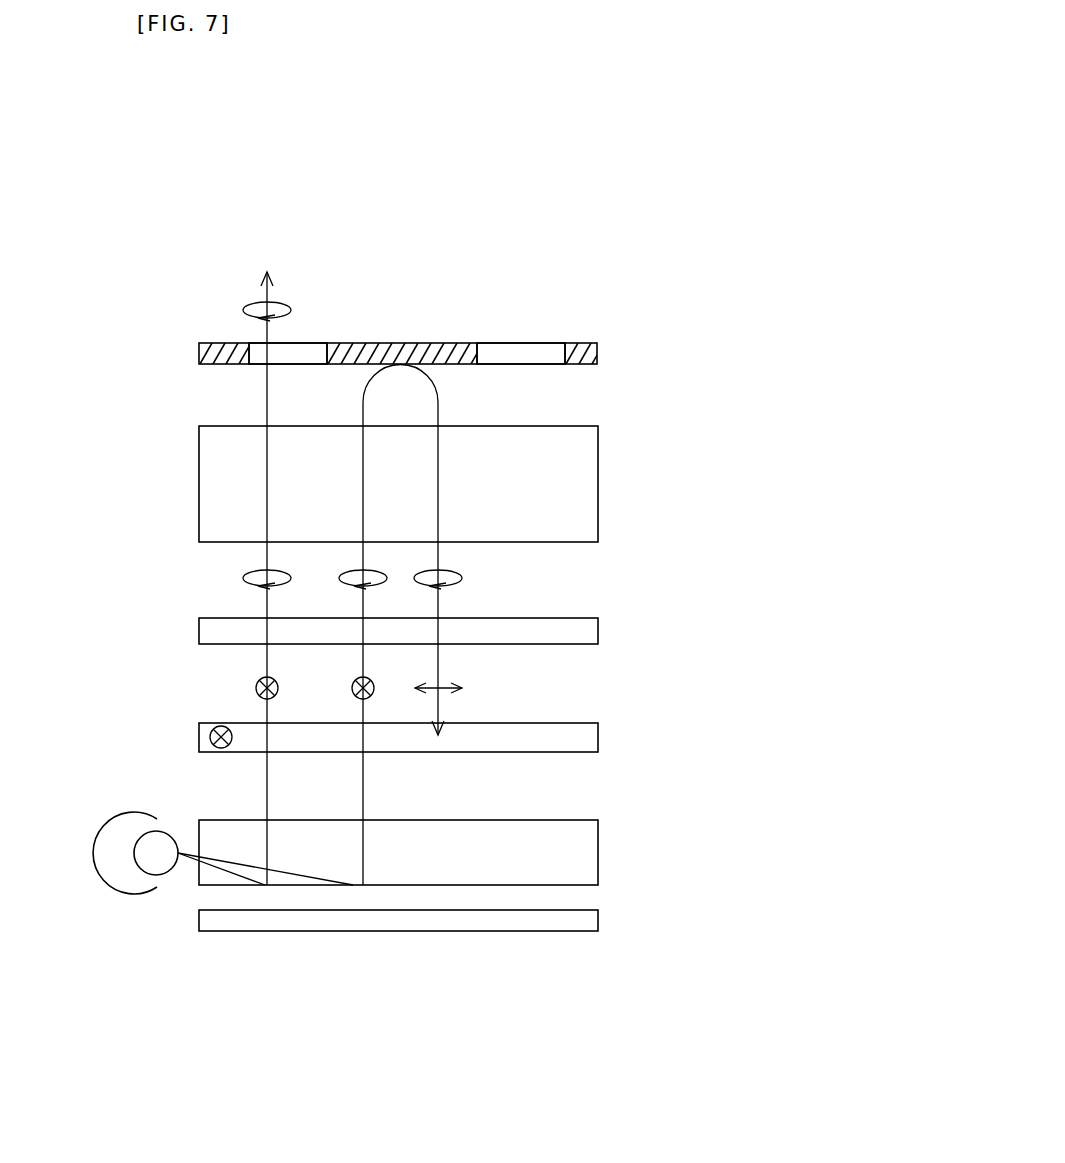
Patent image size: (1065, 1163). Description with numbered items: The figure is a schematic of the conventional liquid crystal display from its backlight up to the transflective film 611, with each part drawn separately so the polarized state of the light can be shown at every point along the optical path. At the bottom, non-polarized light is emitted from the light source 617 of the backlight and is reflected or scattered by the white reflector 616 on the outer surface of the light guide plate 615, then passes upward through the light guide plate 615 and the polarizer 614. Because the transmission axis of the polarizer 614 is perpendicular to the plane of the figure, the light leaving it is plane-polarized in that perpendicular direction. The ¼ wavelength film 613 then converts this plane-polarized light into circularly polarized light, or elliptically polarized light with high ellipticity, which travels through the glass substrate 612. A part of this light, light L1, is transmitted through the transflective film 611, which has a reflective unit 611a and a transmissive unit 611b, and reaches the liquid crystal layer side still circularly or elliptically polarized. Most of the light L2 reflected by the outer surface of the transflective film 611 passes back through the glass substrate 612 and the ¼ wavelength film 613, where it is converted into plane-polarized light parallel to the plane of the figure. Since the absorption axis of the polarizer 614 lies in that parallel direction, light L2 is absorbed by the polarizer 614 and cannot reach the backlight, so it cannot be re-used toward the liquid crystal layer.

The transflective film 611 is at (512, 258).
The reflective unit 611a is at (395, 292).
The transmissive unit 611b is at (407, 258).
The glass substrate 612 is at (519, 509).
The ¼ wavelength film 613 is at (560, 659).
The polarizer 614 is at (483, 775).
The light guide plate 615 is at (449, 955).
The white reflector 616 is at (398, 976).
The light source 617 is at (192, 816).
The light transmitted through the transflective film L1 is at (223, 578).
The light reflected by the transflective film L2 is at (517, 625).